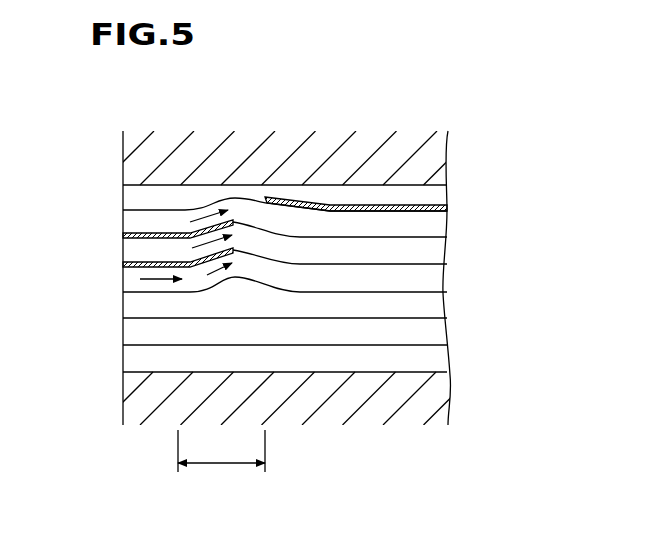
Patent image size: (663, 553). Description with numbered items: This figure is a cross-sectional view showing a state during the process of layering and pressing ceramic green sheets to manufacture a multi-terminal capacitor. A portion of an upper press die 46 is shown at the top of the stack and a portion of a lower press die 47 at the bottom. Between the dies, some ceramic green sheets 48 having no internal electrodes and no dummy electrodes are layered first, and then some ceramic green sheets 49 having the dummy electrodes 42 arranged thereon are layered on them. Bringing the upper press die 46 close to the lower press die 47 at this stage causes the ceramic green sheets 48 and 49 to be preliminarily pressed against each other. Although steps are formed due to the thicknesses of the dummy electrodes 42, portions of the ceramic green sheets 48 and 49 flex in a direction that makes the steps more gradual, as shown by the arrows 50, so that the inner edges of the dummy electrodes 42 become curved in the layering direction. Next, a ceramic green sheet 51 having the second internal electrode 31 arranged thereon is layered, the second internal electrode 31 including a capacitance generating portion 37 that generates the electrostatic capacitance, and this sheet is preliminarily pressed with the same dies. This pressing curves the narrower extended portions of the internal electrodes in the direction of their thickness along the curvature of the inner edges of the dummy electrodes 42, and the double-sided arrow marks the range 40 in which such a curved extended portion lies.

The second internal electrode 31 is at (358, 203).
The capacitance generating portion 37 is at (407, 208).
The range 40 is at (237, 463).
The dummy electrodes 42 is at (143, 232).
The upper press die 46 is at (140, 158).
The lower press die 47 is at (135, 402).
The ceramic green sheets 48 is at (435, 358).
The ceramic green sheets 49 is at (430, 253).
The arrows 50 is at (192, 248).
The ceramic green sheet 51 is at (428, 195).